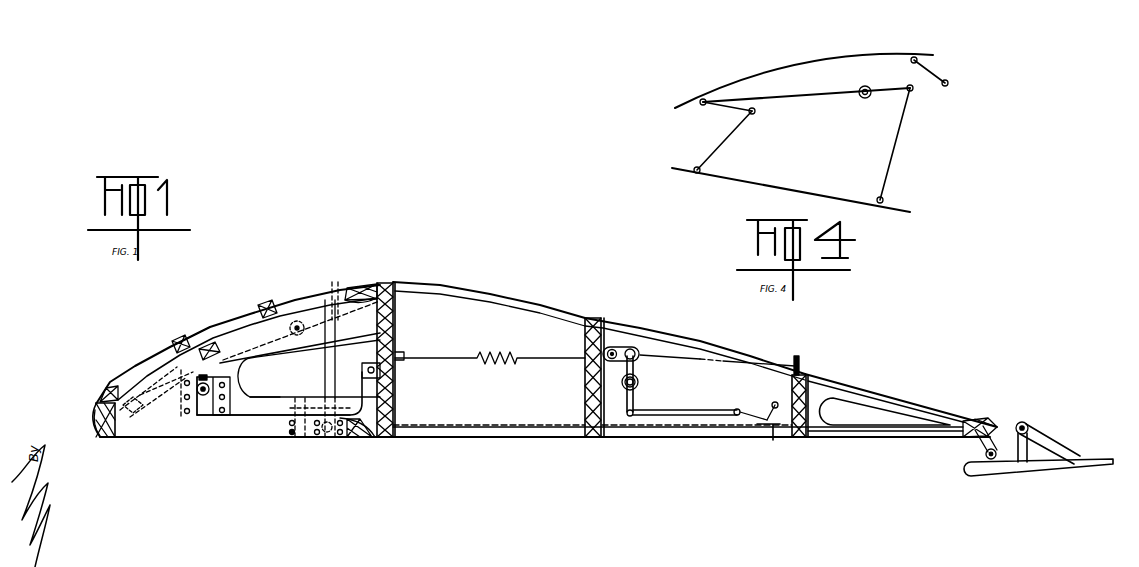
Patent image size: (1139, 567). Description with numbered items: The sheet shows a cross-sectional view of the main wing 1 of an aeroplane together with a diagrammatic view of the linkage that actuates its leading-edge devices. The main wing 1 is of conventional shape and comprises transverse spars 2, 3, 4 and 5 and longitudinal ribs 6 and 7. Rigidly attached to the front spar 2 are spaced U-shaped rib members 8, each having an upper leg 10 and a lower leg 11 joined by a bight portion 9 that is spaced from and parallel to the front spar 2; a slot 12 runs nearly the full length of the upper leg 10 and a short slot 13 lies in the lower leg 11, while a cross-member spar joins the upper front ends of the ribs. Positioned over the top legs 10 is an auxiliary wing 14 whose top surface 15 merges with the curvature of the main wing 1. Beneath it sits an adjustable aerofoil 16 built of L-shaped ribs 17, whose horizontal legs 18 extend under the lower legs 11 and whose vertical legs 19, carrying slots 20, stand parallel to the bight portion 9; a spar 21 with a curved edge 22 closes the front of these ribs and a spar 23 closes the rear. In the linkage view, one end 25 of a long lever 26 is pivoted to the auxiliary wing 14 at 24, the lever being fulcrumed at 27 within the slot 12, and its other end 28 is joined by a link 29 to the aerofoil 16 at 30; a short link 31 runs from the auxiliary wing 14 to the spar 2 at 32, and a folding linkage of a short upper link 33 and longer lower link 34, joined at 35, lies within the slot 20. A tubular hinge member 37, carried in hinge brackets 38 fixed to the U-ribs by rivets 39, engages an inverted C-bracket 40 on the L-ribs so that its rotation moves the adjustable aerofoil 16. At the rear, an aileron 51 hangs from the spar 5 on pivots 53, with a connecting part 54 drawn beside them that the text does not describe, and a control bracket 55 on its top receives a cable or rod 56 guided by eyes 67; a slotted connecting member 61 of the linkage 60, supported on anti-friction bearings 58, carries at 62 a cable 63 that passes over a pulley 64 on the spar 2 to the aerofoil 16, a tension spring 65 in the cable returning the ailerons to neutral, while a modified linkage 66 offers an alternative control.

In FIG. 1, the main wing 1 is at (545, 305).
In FIG. 1, the front spar 2 is at (400, 403).
In FIG. 1, the transverse spar 3 is at (580, 397).
In FIG. 1, the transverse spar 4 is at (800, 437).
In FIG. 1, the transverse spar 5 is at (990, 420).
In FIG. 1, the longitudinal rib 6 is at (490, 294).
In FIG. 1, the longitudinal rib 7 is at (532, 437).
In FIG. 1, the U-shaped rib member 8 is at (280, 437).
In FIG. 1, the bight portion 9 is at (252, 363).
In FIG. 1, the upper leg 10 is at (300, 322).
In FIG. 1, the lower leg 11 is at (261, 437).
In FIG. 1, the slot 12 is at (343, 298).
In FIG. 1, the short slot 13 is at (337, 402).
In FIG. 1, the auxiliary wing 14 is at (232, 320).
In FIG. 4, the auxiliary wing 14 is at (785, 66).
In FIG. 1, the top surface 15 is at (187, 335).
In FIG. 1, the adjustable aerofoil 16 is at (118, 437).
In FIG. 4, the adjustable aerofoil 16 is at (790, 187).
In FIG. 1, the L-shaped rib 17 is at (187, 418).
In FIG. 1, the horizontal leg 18 is at (213, 415).
In FIG. 1, the vertical leg 19 is at (162, 418).
In FIG. 1, the slot 20 is at (136, 415).
In FIG. 1, the spar 21 is at (95, 430).
In FIG. 1, the curved edge 22 is at (92, 413).
In FIG. 1, the spar 23 is at (352, 437).
In FIG. 4, the pivot 24 is at (700, 106).
In FIG. 4, the end of lever 25 is at (705, 96).
In FIG. 1, the long lever 26 is at (198, 352).
In FIG. 4, the long lever 26 is at (838, 94).
In FIG. 4, the fulcrum 27 is at (866, 100).
In FIG. 4, the end of lever 28 is at (915, 92).
In FIG. 1, the link 29 is at (338, 352).
In FIG. 4, the link 29 is at (897, 148).
In FIG. 4, the pivot 30 is at (887, 198).
In FIG. 1, the short link 31 is at (388, 283).
In FIG. 4, the short link 31 is at (920, 60).
In FIG. 4, the pivot 32 is at (950, 83).
In FIG. 1, the short upper link 33 is at (330, 563).
In FIG. 4, the short upper link 33 is at (725, 109).
In FIG. 1, the lower link 34 is at (112, 392).
In FIG. 4, the lower link 34 is at (728, 143).
In FIG. 4, the pivot 35 is at (757, 112).
In FIG. 1, the tubular hinge member 37 is at (203, 396).
In FIG. 1, the hinge bracket 38 is at (244, 415).
In FIG. 1, the rivets 39 is at (172, 415).
In FIG. 1, the inverted C-bracket 40 is at (300, 397).
In FIG. 1, the aileron 51 is at (1000, 472).
In FIG. 1, the pivot 53 is at (985, 458).
In FIG. 1, the link 54 is at (975, 440).
In FIG. 1, the control bracket 55 is at (1050, 443).
In FIG. 1, the cable or rod 56 is at (890, 385).
In FIG. 1, the anti-friction bearings 58 is at (636, 384).
In FIG. 1, the linkage 60 is at (614, 362).
In FIG. 1, the slotted connecting member 61 is at (612, 348).
In FIG. 1, the attachment point 62 is at (625, 350).
In FIG. 1, the cable 63 is at (540, 358).
In FIG. 1, the pulley 64 is at (398, 355).
In FIG. 1, the tension spring 65 is at (497, 353).
In FIG. 1, the modified linkage 66 is at (697, 416).
In FIG. 1, the eyes 67 is at (800, 358).